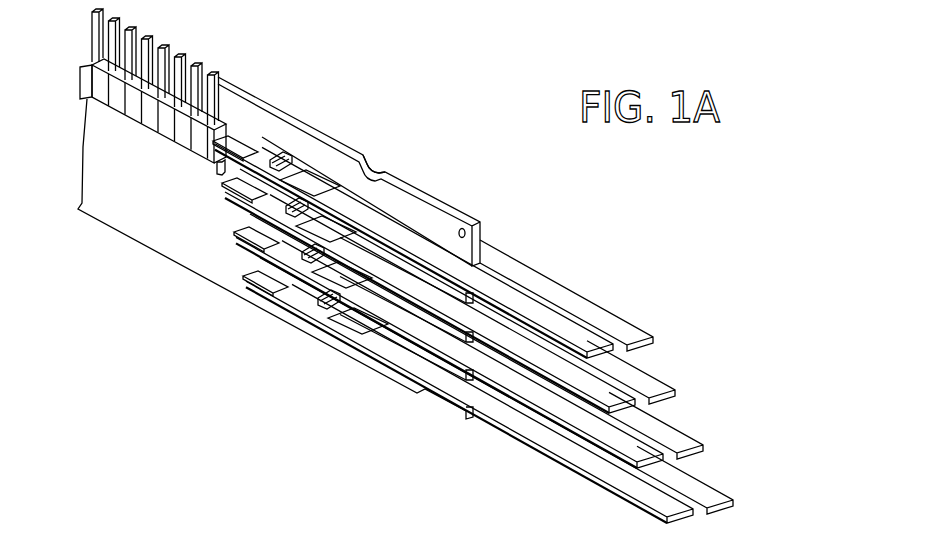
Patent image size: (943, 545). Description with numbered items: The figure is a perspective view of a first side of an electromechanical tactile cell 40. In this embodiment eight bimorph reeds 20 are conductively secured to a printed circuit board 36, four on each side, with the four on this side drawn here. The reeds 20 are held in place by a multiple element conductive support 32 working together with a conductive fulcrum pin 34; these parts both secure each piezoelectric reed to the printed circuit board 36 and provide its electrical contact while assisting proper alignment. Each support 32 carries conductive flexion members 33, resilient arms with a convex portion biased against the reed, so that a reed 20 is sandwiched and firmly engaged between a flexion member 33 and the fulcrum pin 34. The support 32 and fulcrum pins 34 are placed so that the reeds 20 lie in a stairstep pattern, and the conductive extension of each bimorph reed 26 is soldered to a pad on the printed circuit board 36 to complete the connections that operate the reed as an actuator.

The bimorph reed 20 is at (575, 338).
The conductive extension of the bimorph reed 26 is at (240, 145).
The multiple element conductive support 32 is at (371, 196).
The conductive flexion member 33 is at (318, 180).
The conductive fulcrum pin 34 is at (282, 162).
The printed circuit board 36 is at (370, 165).
The electromechanical tactile cell 40 is at (455, 160).